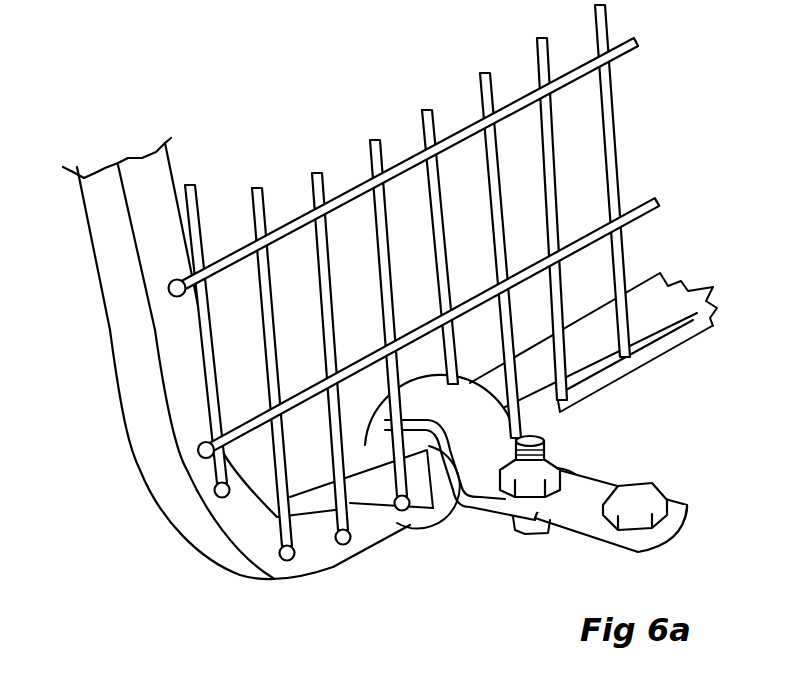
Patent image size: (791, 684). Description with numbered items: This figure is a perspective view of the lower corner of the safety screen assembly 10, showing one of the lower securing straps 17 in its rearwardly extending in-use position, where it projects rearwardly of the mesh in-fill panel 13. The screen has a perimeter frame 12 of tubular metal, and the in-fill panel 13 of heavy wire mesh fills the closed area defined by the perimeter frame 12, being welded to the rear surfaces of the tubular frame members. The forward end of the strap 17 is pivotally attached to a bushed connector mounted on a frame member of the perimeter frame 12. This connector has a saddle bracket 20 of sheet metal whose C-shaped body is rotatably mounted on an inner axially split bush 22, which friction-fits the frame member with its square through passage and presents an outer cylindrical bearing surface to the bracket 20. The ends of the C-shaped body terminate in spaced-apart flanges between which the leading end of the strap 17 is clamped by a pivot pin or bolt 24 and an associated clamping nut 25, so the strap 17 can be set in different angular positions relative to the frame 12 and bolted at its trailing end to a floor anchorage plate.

The safety screen assembly 10 is at (390, 384).
The perimeter frame 12 is at (178, 362).
The in-fill panel 13 is at (612, 170).
The lower securing strap 17 is at (687, 508).
The saddle bracket 20 is at (444, 410).
The bush 22 is at (440, 530).
The pivot pin or bolt 24 is at (536, 526).
The clamping nut 25 is at (548, 445).